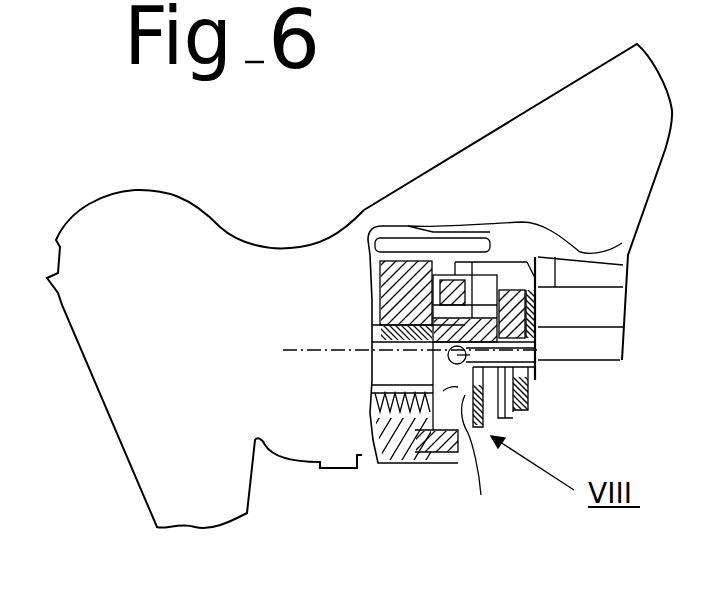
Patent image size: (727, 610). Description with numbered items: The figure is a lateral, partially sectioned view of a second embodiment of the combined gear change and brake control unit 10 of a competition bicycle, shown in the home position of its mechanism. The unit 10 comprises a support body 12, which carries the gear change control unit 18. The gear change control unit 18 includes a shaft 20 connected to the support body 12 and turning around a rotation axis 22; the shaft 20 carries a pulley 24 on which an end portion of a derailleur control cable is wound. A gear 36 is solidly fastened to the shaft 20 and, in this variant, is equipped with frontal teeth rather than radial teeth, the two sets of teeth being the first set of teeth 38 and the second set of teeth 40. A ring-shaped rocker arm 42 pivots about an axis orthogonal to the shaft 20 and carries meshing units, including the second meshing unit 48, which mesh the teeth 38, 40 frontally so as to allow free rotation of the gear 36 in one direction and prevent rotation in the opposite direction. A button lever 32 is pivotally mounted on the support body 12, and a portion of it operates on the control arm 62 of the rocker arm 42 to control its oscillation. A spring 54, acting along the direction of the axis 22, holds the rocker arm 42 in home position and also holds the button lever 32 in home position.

The combined gear change and brake control unit 10 is at (172, 152).
The support body 12 is at (424, 170).
The gear change control unit 18 is at (353, 283).
The shaft 20 is at (372, 329).
The rotation axis 22 is at (302, 355).
The pulley 24 is at (511, 418).
The button lever 32 is at (419, 232).
The gear 36 is at (556, 254).
The first set of teeth 38 is at (481, 461).
The second set of teeth 40 is at (492, 290).
The rocker arm 42 is at (428, 448).
The second meshing unit 48 is at (493, 290).
The spring 54 is at (383, 458).
The control arm 62 is at (537, 363).